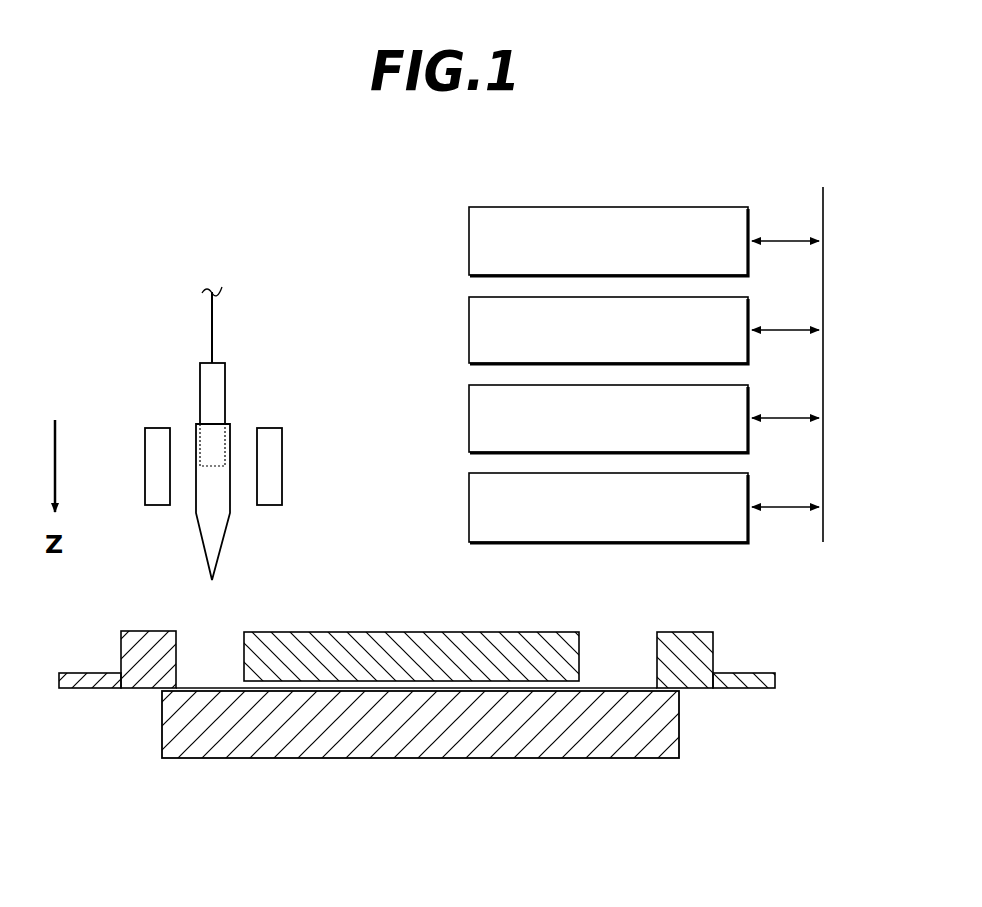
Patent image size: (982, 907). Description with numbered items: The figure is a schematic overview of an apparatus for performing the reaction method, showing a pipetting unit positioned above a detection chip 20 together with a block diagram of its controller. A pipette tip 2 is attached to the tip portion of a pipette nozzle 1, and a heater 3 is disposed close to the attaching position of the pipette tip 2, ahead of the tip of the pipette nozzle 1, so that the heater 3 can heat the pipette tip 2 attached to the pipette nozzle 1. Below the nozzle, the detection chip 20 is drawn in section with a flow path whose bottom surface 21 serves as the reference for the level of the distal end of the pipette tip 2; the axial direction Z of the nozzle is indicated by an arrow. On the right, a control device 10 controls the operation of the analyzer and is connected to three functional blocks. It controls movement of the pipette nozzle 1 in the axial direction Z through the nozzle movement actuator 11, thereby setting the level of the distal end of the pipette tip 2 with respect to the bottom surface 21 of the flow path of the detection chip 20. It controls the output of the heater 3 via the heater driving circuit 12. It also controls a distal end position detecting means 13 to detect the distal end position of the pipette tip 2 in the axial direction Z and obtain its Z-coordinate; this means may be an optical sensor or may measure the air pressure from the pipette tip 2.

The pipette nozzle 1 is at (225, 390).
The pipette tip 2 is at (227, 535).
The heater 3 is at (145, 448).
The control device 10 is at (469, 228).
The nozzle movement actuator 11 is at (469, 317).
The heater driving circuit 12 is at (469, 410).
The distal end position detecting means 13 is at (469, 488).
The detection chip 20 is at (675, 611).
The bottom surface 21 is at (202, 688).